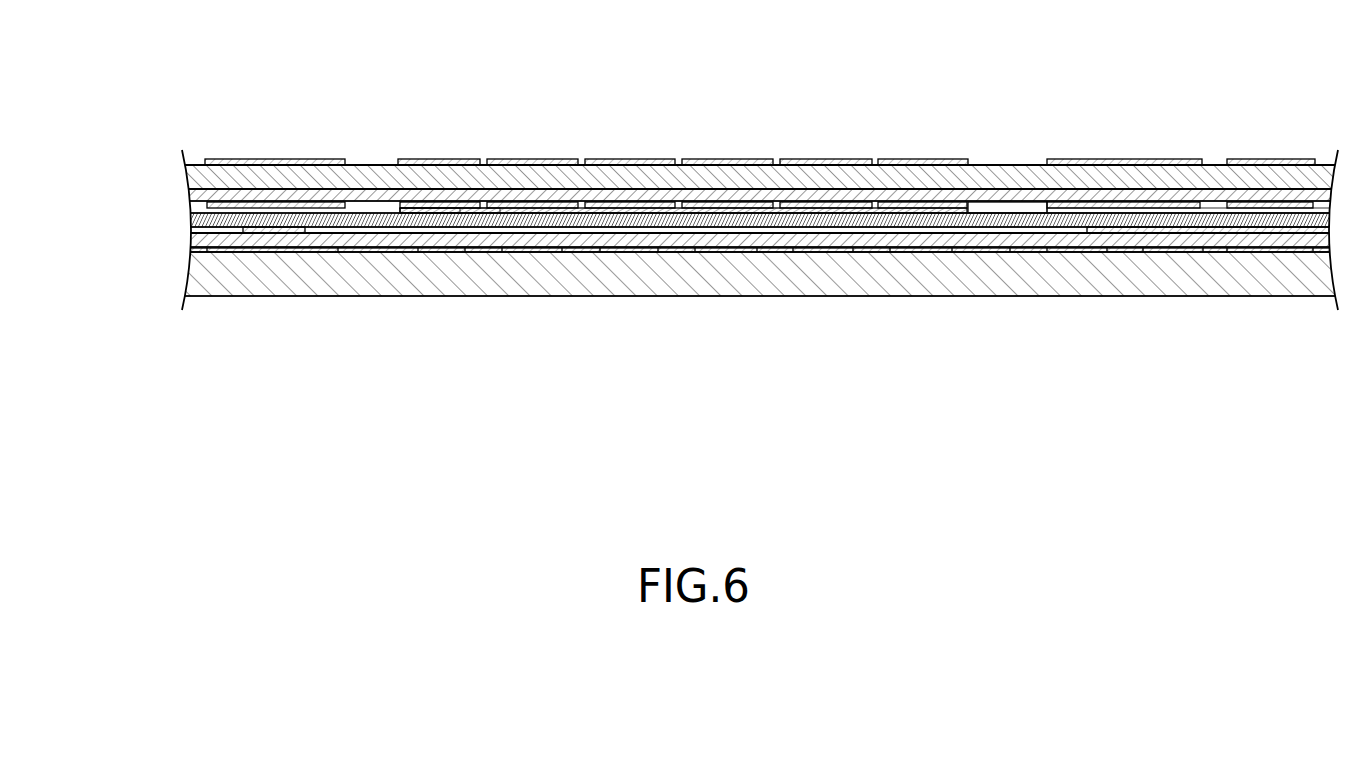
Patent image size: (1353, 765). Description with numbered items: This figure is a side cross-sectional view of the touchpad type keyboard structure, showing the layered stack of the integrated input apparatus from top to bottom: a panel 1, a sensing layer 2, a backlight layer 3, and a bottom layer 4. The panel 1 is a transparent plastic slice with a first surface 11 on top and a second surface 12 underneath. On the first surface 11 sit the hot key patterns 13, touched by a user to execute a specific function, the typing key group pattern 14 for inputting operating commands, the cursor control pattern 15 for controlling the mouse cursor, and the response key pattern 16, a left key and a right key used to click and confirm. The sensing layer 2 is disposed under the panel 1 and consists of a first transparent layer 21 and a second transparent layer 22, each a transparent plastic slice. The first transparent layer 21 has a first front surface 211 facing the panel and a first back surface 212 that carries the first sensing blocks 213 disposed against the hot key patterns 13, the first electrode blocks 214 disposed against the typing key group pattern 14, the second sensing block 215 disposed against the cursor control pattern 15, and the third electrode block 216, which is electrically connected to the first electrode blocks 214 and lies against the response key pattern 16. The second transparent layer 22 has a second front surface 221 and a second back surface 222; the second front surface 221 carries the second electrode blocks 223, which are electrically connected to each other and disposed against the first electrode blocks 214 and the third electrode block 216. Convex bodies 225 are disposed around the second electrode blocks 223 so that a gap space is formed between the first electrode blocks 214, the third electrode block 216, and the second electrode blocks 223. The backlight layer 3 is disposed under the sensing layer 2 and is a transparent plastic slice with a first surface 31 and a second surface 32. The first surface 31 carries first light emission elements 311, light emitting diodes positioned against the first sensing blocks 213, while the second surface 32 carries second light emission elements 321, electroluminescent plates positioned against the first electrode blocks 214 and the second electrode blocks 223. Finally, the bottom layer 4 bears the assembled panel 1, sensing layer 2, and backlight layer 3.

The panel 1 is at (372, 172).
The first surface 11 is at (990, 160).
The second surface 12 is at (1027, 202).
The hot key patterns 13 is at (265, 160).
The typing key group pattern 14 is at (540, 160).
The cursor control pattern 15 is at (1124, 160).
The response key pattern 16 is at (1262, 160).
The sensing layer 2 is at (113, 158).
The first transparent layer 21 is at (195, 196).
The first front surface 211 is at (683, 210).
The first back surface 212 is at (998, 213).
The first sensing blocks 213 is at (307, 203).
The first electrode blocks 214 is at (457, 203).
The second sensing block 215 is at (1088, 203).
The third electrode block 216 is at (1255, 203).
The second transparent layer 22 is at (195, 220).
The second front surface 221 is at (1030, 208).
The second back surface 222 is at (1088, 233).
The second electrode blocks 223 is at (448, 213).
The convex bodies 225 is at (413, 210).
The backlight layer 3 is at (192, 240).
The first surface 31 is at (645, 240).
The first light emission elements 311 is at (291, 233).
The second surface 32 is at (575, 250).
The second light emission elements 321 is at (516, 252).
The bottom layer 4 is at (270, 272).